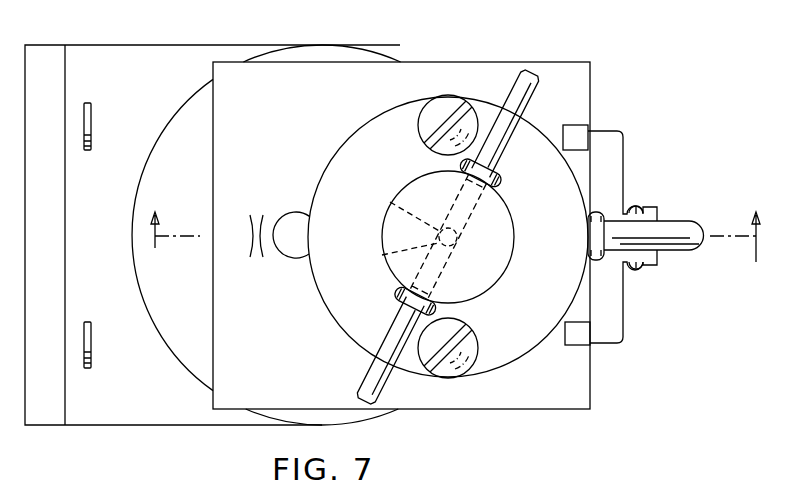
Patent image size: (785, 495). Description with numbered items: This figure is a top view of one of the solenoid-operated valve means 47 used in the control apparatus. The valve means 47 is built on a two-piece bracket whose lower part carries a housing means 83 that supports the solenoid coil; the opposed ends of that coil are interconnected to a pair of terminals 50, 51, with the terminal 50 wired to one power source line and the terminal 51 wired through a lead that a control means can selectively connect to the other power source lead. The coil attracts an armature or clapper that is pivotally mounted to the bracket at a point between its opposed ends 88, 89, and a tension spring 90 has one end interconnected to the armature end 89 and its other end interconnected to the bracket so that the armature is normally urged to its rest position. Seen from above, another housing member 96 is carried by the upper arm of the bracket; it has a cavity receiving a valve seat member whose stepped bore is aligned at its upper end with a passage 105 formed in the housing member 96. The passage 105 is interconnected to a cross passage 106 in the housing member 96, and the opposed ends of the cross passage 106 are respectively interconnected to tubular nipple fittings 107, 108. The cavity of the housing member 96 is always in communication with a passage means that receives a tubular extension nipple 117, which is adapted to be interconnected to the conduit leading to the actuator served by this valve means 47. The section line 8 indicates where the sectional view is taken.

The section line 8- 8 is at (454, 223).
The valve means 47 is at (625, 114).
The terminal 50 is at (91, 350).
The terminal 51 is at (91, 126).
The housing means 83 is at (192, 98).
The end of armature 88 is at (214, 399).
The end of armature 89 is at (657, 259).
The tension spring 90 is at (637, 205).
The housing member 96 is at (411, 99).
The passage 105 is at (391, 203).
The cross passage 106 is at (397, 248).
The tubular nipple fitting 107 is at (374, 363).
The tubular nipple fitting 108 is at (520, 68).
The tubular extension nipple 117 is at (672, 222).